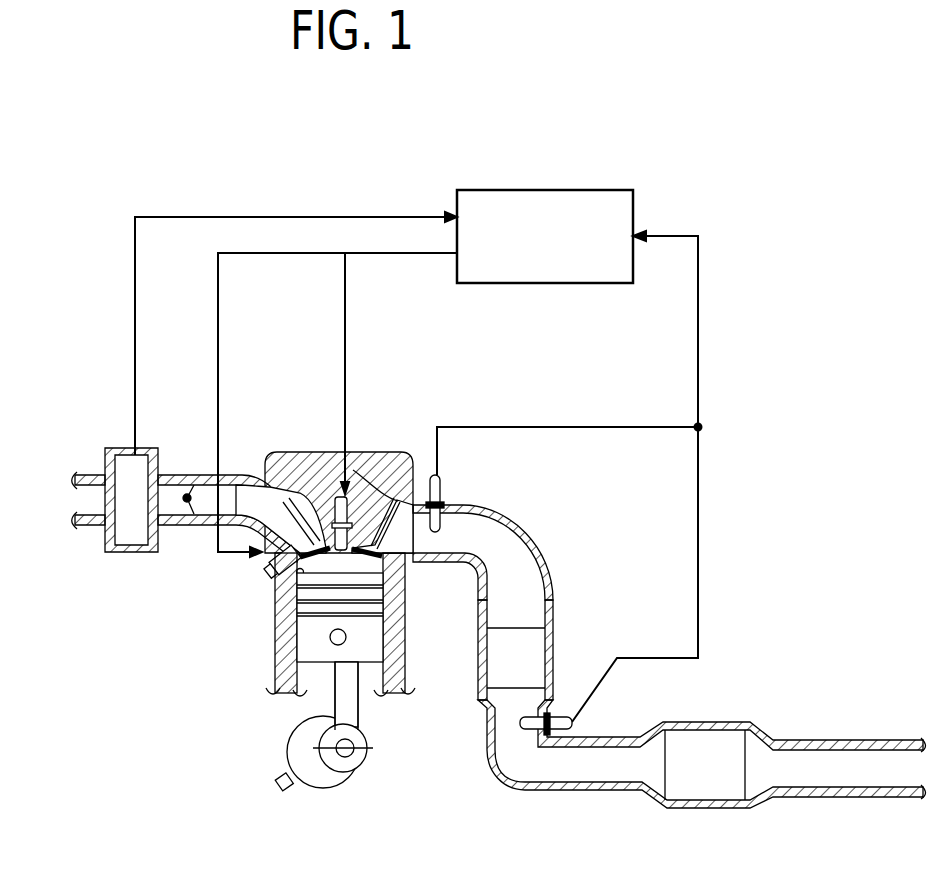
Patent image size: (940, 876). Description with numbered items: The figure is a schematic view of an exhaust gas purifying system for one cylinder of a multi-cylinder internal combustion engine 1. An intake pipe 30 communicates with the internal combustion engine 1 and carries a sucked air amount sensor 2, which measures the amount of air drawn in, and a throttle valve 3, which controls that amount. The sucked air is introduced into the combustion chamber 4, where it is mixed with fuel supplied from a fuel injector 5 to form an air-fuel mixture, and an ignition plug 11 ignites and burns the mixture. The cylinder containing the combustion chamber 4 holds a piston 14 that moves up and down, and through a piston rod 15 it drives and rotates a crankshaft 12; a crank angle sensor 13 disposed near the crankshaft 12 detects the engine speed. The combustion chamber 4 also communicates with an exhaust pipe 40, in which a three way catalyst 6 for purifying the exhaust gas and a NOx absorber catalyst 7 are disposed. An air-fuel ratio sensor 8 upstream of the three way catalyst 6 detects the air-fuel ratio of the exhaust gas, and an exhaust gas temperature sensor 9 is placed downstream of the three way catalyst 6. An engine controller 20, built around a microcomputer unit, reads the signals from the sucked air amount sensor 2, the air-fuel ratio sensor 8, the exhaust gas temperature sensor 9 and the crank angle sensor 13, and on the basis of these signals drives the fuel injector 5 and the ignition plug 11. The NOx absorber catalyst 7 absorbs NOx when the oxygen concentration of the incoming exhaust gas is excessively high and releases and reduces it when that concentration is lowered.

The internal combustion engine 1 is at (277, 452).
The sucked air amount sensor 2 is at (126, 447).
The throttle valve 3 is at (188, 502).
The combustion chamber 4 is at (353, 573).
The fuel injector 5 is at (280, 562).
The three way catalyst 6 is at (520, 660).
The NOx absorber catalyst 7 is at (698, 780).
The air-fuel ratio sensor 8 is at (442, 490).
The exhaust gas temperature sensor 9 is at (560, 716).
The ignition plug 11 is at (348, 494).
The crankshaft 12 is at (318, 782).
The crank angle sensor 13 is at (280, 775).
The piston 14 is at (308, 637).
The piston rod 15 is at (350, 705).
The engine controller 20 is at (520, 202).
The intake pipe 30 is at (176, 474).
The exhaust pipe 40 is at (516, 533).